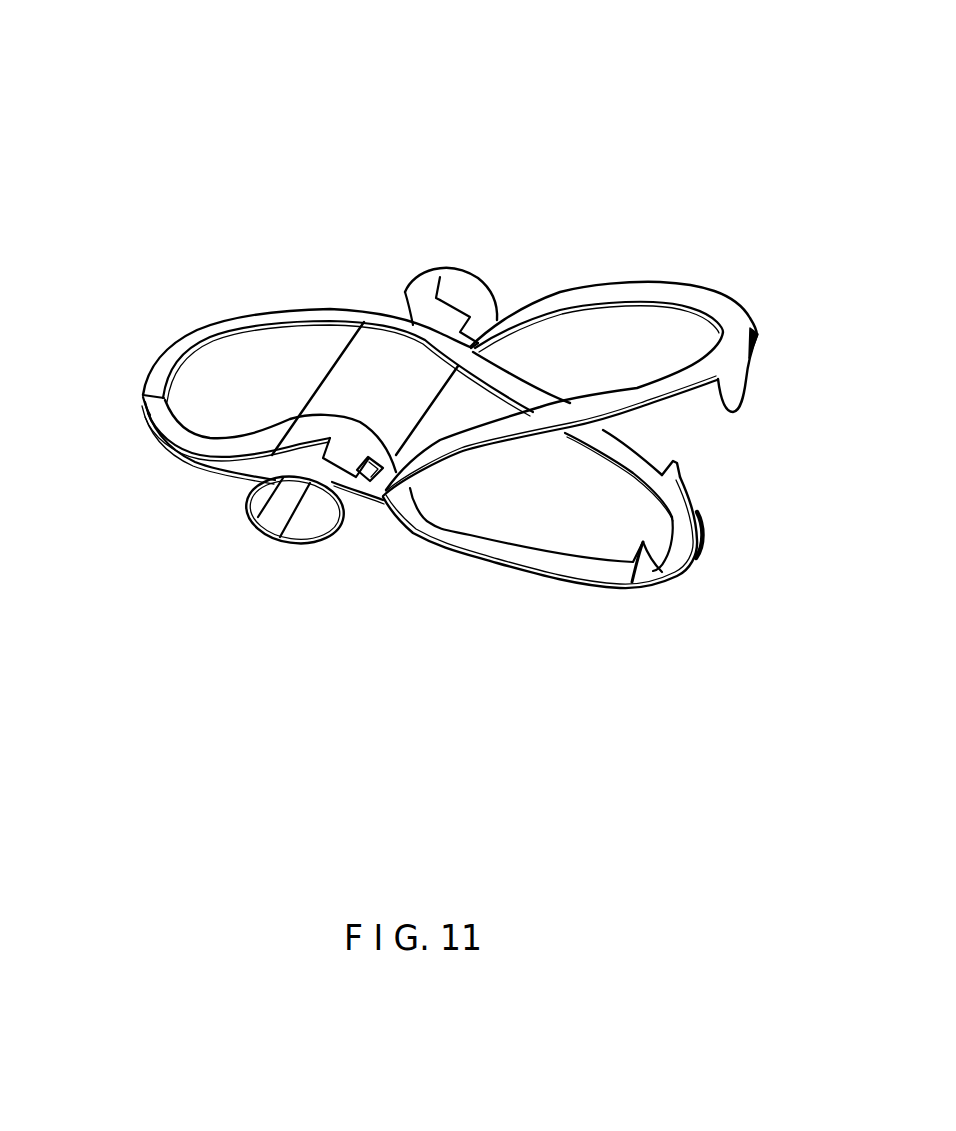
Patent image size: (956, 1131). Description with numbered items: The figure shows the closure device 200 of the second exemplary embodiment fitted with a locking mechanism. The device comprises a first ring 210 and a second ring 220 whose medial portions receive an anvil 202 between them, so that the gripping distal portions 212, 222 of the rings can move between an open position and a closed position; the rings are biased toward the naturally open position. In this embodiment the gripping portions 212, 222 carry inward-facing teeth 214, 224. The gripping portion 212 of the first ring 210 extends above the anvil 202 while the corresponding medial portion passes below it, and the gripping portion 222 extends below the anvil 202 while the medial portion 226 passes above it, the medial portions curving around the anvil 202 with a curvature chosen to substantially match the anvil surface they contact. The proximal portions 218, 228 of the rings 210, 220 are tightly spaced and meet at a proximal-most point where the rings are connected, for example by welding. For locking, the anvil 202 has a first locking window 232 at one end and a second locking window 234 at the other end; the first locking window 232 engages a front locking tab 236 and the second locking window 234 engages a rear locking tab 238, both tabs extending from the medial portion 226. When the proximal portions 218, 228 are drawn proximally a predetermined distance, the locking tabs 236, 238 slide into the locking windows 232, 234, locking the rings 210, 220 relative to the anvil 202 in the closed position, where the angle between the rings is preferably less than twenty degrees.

The closure device 200 is at (110, 150).
The anvil 202 is at (362, 353).
The first ring 210 is at (693, 288).
The gripping distal portion 212 is at (753, 333).
The inward-facing teeth 214 is at (747, 381).
The proximal portion 218 is at (147, 410).
The second ring 220 is at (550, 570).
The gripping distal portion 222 is at (687, 570).
The inward-facing teeth 224 is at (667, 470).
The medial portion 226 is at (413, 325).
The proximal portion 228 is at (182, 340).
The first locking window 232 is at (352, 455).
The second locking window 234 is at (440, 278).
The front locking tab 236 is at (372, 488).
The rear locking tab 238 is at (487, 328).